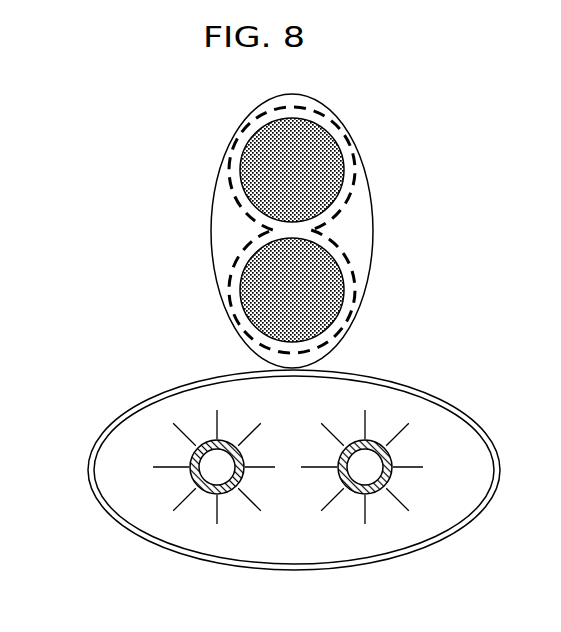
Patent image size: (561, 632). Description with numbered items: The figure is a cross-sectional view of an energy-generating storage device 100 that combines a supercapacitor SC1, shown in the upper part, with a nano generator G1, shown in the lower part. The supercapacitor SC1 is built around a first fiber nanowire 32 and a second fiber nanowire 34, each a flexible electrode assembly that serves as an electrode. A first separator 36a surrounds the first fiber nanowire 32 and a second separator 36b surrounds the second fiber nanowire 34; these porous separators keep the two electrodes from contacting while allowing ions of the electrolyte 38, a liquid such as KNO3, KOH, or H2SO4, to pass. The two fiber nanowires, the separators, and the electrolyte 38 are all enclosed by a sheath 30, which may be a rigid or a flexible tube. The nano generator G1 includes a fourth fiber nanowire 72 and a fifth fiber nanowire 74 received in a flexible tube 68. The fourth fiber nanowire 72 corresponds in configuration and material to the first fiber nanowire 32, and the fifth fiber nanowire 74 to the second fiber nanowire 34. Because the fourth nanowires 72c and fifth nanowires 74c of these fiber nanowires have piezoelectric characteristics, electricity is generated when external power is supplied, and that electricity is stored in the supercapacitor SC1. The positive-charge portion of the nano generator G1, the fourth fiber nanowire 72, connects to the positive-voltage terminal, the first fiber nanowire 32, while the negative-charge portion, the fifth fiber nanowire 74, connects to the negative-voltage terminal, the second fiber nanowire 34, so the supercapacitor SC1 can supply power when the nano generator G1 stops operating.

The energy-generating storage device 100 is at (487, 114).
The supercapacitor SC1 is at (140, 165).
The sheath 30 is at (363, 158).
The electrolyte 38 is at (358, 215).
The first separator 36a is at (348, 263).
The second separator 36b is at (230, 187).
The second fiber nanowire 34 is at (258, 150).
The first fiber nanowire 32 is at (252, 289).
The nano generator G1 is at (80, 437).
The flexible tube 68 is at (113, 512).
The fourth fiber nanowire 72 is at (153, 425).
The fifth fiber nanowire 74 is at (427, 427).
The fourth nanowires 72c is at (253, 505).
The fifth nanowires 74c is at (322, 507).